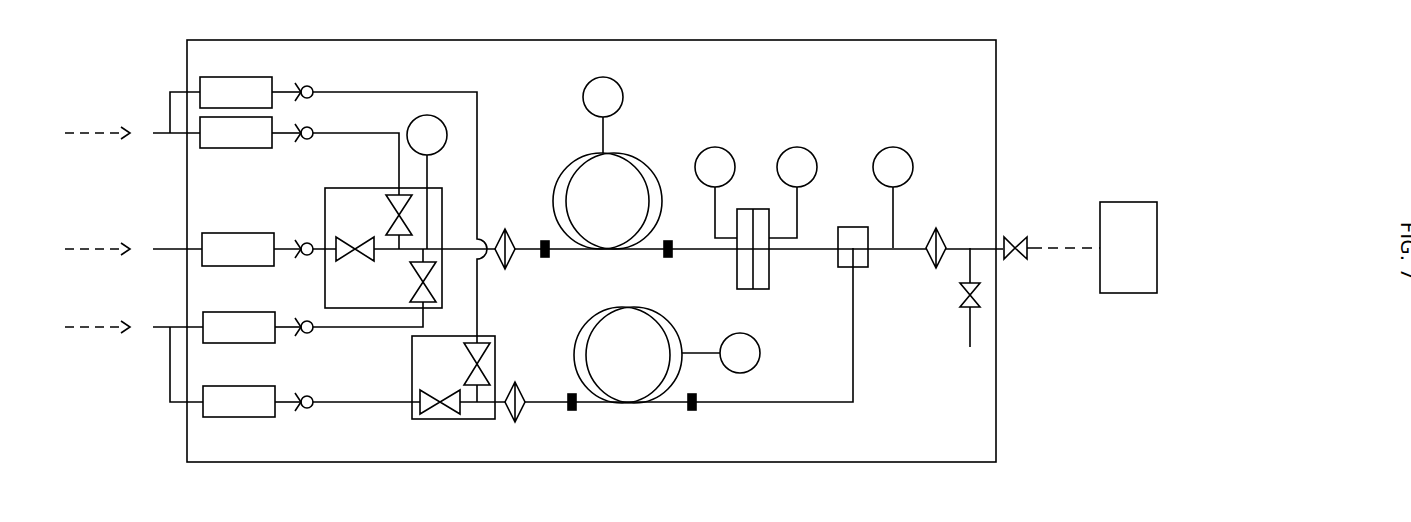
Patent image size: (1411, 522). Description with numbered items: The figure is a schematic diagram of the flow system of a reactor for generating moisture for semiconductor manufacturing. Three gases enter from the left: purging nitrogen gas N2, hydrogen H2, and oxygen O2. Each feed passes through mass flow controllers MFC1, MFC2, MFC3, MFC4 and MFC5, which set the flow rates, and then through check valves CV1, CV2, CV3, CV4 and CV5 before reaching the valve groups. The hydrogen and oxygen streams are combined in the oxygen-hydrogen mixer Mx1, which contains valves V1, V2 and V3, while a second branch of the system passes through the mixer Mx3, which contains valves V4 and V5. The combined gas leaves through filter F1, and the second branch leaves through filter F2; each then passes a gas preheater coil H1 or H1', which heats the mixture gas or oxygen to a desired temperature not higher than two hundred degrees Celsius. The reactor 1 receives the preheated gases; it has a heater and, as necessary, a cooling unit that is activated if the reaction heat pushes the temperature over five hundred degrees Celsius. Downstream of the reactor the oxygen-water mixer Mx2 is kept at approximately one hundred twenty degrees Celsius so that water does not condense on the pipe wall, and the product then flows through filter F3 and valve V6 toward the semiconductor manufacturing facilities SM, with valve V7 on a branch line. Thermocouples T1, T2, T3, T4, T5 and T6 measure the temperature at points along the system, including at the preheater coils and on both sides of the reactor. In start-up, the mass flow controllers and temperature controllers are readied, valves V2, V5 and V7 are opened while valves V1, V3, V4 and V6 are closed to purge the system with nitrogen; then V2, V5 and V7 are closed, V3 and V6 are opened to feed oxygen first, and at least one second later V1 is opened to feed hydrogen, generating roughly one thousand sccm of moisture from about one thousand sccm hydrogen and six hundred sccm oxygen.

The reactor 1 is at (752, 209).
The semiconductor manufacturing facilities SM is at (1127, 202).
The purging nitrogen gas N2 is at (132, 115).
The hydrogen H2 is at (97, 238).
The oxygen O2 is at (134, 349).
The mass flow controller MFC1 is at (238, 249).
The mass flow controller MFC2 is at (250, 132).
The mass flow controller MFC3 is at (251, 327).
The mass flow controller MFC4 is at (251, 401).
The mass flow controller MFC5 is at (250, 92).
The check valve CV1 is at (307, 84).
The check valve CV2 is at (311, 140).
The check valve CV3 is at (302, 257).
The check valve CV4 is at (311, 335).
The check valve CV5 is at (311, 410).
The valve V1 is at (340, 238).
The valve V2 is at (408, 207).
The valve V3 is at (410, 290).
The valve V4 is at (428, 390).
The valve V5 is at (485, 350).
The valve V6 is at (1016, 237).
The valve V7 is at (976, 292).
The oxygen-hydrogen mixer Mx1 is at (442, 283).
The oxygen-water mixer Mx2 is at (868, 258).
The mixer Mx3 is at (470, 419).
The filter F1 is at (507, 228).
The filter F2 is at (519, 389).
The filter F3 is at (937, 228).
The gas preheater coil H1 is at (621, 178).
The gas preheater coil H1' is at (641, 330).
The thermocouple T1 is at (427, 182).
The thermocouple T2 is at (603, 115).
The thermocouple T3 is at (716, 192).
The thermocouple T4 is at (793, 192).
The thermocouple T5 is at (893, 197).
The thermocouple T6 is at (721, 353).